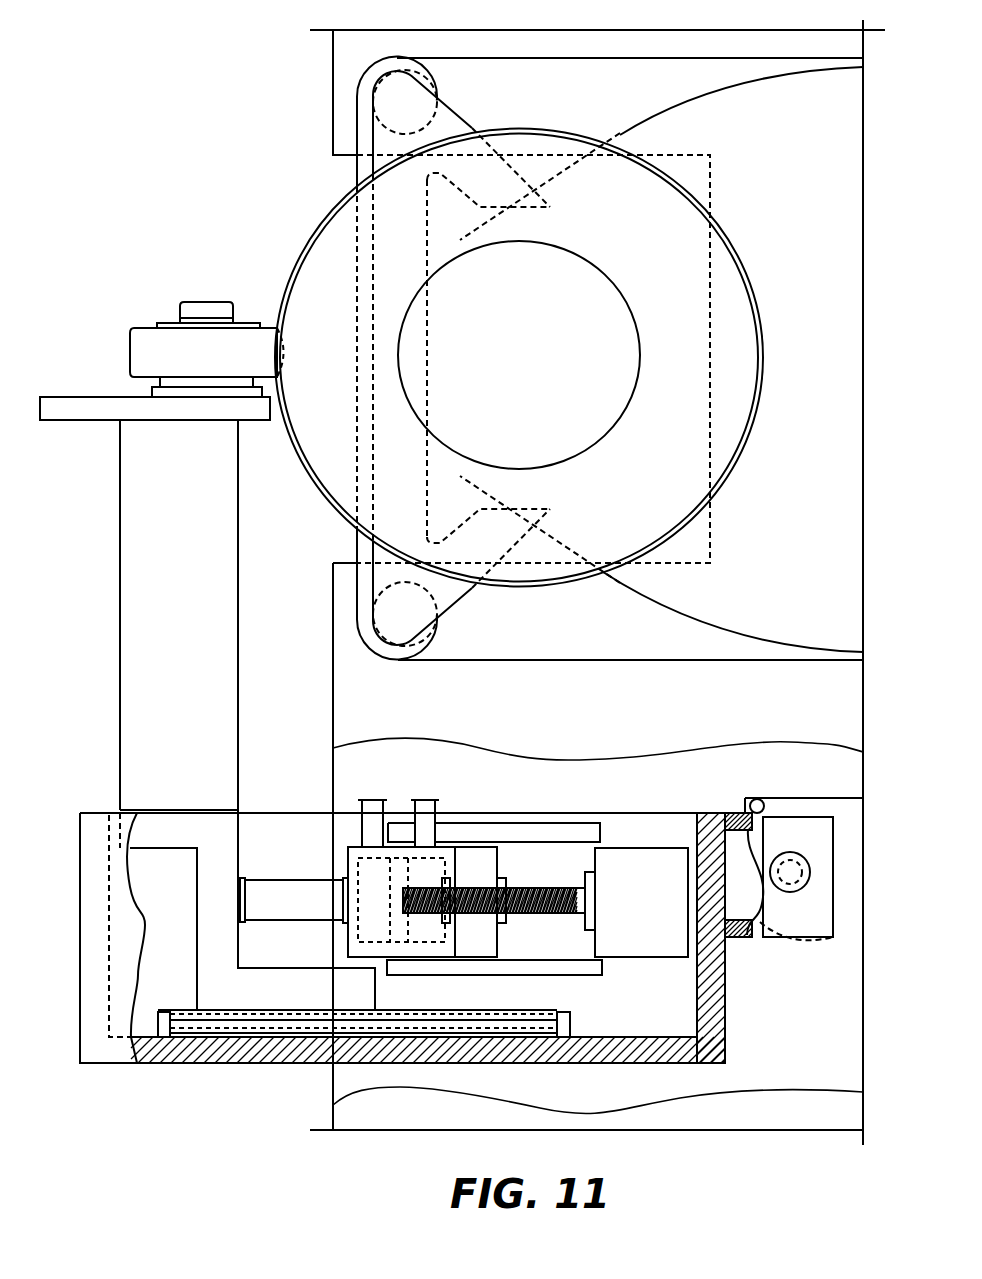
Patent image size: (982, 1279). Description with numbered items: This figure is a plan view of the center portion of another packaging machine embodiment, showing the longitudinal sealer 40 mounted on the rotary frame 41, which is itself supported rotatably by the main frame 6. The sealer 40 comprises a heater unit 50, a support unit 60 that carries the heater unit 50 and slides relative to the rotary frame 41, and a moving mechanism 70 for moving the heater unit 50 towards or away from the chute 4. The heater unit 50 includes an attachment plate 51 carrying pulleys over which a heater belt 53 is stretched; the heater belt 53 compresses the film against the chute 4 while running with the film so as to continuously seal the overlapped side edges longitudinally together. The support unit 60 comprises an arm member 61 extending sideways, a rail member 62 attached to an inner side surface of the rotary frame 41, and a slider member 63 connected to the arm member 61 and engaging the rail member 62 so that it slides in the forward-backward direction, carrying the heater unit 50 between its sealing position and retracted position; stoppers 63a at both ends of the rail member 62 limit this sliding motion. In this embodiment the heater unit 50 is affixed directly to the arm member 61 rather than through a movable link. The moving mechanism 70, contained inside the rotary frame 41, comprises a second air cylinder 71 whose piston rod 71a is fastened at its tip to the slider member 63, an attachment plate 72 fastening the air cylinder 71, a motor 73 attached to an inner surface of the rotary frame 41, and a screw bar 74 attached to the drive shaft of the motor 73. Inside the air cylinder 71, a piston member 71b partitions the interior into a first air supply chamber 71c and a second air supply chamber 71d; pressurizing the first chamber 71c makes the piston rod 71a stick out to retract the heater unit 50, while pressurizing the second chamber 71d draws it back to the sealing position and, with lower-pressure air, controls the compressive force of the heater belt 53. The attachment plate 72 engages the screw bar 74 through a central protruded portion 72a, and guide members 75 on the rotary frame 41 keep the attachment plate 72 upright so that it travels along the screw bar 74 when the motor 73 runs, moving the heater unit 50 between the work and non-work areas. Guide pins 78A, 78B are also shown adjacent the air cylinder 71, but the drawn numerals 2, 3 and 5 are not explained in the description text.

The frame 2 is at (352, 57).
The lower blade 3 is at (712, 600).
The chute 4 is at (745, 438).
The upper blade 5 is at (570, 78).
The main frame 6 is at (853, 928).
The longitudinal sealer 40 is at (92, 785).
The rotary frame 41 is at (645, 1047).
The heater unit 50 is at (138, 305).
The attachment plate 51 is at (97, 400).
The heater belt 53 is at (138, 350).
The support unit 60 is at (246, 830).
The arm member 61 is at (138, 643).
The rail member 62 is at (515, 1025).
The slider member 63 is at (208, 907).
The stopper 63a is at (165, 1030).
The moving mechanism 70 is at (645, 806).
The second air cylinder 71 is at (350, 935).
The piston rod 71a is at (283, 895).
The piston member 71b is at (392, 945).
The first air supply chamber 71c is at (440, 938).
The second air supply chamber 71d is at (360, 862).
The attachment plate 72 is at (480, 928).
The protruded portion 72a is at (505, 880).
The motor 73 is at (655, 938).
The screw bar 74 is at (532, 895).
The guide member 75 is at (469, 830).
The guide pin 78A is at (426, 808).
The guide pin 78B is at (374, 810).